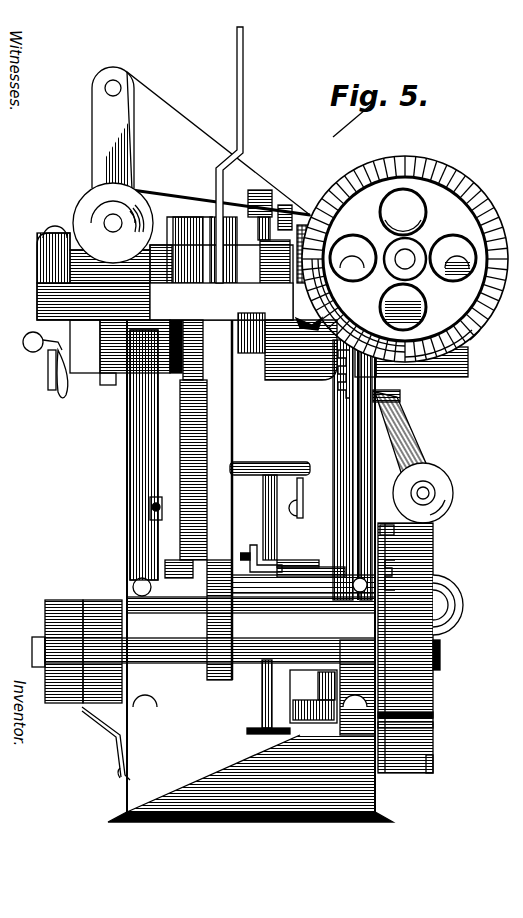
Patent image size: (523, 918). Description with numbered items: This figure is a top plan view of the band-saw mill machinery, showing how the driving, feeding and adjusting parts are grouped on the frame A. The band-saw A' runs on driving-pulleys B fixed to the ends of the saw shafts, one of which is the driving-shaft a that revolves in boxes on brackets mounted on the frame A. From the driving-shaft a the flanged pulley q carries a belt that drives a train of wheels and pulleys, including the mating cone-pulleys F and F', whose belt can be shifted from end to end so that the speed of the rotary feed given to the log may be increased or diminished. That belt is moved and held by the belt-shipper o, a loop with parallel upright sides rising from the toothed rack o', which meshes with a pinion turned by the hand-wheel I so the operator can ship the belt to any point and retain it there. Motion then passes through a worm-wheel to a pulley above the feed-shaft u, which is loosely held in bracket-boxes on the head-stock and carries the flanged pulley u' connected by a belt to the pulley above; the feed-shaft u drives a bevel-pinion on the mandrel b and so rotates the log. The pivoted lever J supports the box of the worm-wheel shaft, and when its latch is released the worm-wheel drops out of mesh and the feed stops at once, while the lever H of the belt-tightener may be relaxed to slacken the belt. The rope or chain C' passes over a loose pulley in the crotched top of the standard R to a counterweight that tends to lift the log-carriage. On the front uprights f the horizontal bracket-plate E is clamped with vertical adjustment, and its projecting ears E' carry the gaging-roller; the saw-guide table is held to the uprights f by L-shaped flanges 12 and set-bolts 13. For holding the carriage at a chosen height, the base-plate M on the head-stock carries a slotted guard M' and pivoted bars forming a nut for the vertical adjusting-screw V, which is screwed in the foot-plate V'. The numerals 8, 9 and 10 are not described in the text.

The rope or chain C' is at (218, 143).
The lever of the belt-tightener H is at (244, 101).
The standard R is at (134, 160).
The cone-pulley F is at (107, 223).
The horizontal toothed rack o' is at (73, 218).
The belt-shipper o is at (184, 294).
The cone-pulley F' is at (403, 212).
The front uprights f is at (310, 345).
The pivoted lever J is at (27, 351).
The hand-wheel I is at (47, 378).
The horizontal bracket-plate E is at (396, 399).
The ears E' is at (406, 446).
The vertical flanges 12 is at (303, 490).
The set-bolts 13 is at (306, 505).
The vertical adjusting-screw V is at (276, 517).
The slotted guard M' is at (259, 550).
The base-plate M is at (311, 564).
The mandrel b is at (386, 525).
The flanged pulley u' is at (163, 563).
The feed-shaft u is at (251, 615).
The shaft a is at (187, 663).
The driving-pulleys B is at (433, 556).
The band-saw A' is at (460, 602).
The bolt 10 is at (441, 655).
The plate 8 is at (433, 715).
The plate 9 is at (433, 726).
The flanged pulley q is at (232, 680).
The foot-plate V' is at (257, 697).
The frame A is at (250, 778).